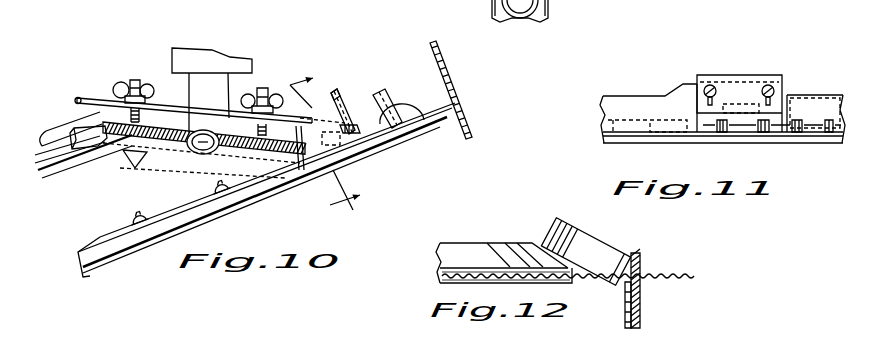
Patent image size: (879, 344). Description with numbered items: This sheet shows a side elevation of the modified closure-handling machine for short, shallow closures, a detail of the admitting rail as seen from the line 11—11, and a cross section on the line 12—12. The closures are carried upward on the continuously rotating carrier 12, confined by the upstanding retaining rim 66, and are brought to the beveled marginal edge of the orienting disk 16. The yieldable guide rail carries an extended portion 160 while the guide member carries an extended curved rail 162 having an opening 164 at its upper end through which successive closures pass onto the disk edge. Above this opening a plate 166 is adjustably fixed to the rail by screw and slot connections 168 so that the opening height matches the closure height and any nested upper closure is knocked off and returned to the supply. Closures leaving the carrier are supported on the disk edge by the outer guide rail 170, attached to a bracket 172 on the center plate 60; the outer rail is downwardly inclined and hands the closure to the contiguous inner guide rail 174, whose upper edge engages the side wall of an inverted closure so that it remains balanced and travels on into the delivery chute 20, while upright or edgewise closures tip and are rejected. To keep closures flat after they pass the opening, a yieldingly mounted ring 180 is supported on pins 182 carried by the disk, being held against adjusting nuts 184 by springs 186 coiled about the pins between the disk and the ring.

In FIG. 10, the section line 11- 11 is at (321, 143).
In FIG. 10, the rotary carrier 12 is at (425, 109).
In FIG. 10, the orienting disk 16 is at (167, 145).
In FIG. 12, the orienting disk 16 is at (500, 244).
In FIG. 10, the delivery chute 20 is at (53, 124).
In FIG. 10, the circular metal plate 60 is at (93, 246).
In FIG. 10, the retaining rim 66 is at (453, 83).
In FIG. 10, the extended portion 160 is at (413, 122).
In FIG. 10, the extended curved rail 162 is at (352, 127).
In FIG. 11, the extended curved rail 162 is at (662, 95).
In FIG. 10, the opening 164 is at (334, 153).
In FIG. 11, the opening 164 is at (768, 123).
In FIG. 10, the plate 166 is at (333, 92).
In FIG. 11, the plate 166 is at (727, 77).
In FIG. 11, the screw and slot connections 168 is at (775, 89).
In FIG. 10, the outer guide rail 170 is at (247, 157).
In FIG. 12, the outer guide rail 170 is at (641, 274).
In FIG. 10, the bracket 172 is at (140, 215).
In FIG. 10, the inner guide rail 174 is at (128, 160).
In FIG. 12, the inner guide rail 174 is at (625, 313).
In FIG. 10, the ring 180 is at (88, 97).
In FIG. 10, the pins 182 is at (136, 80).
In FIG. 10, the adjusting nuts 184 is at (116, 82).
In FIG. 10, the springs 186 is at (150, 109).